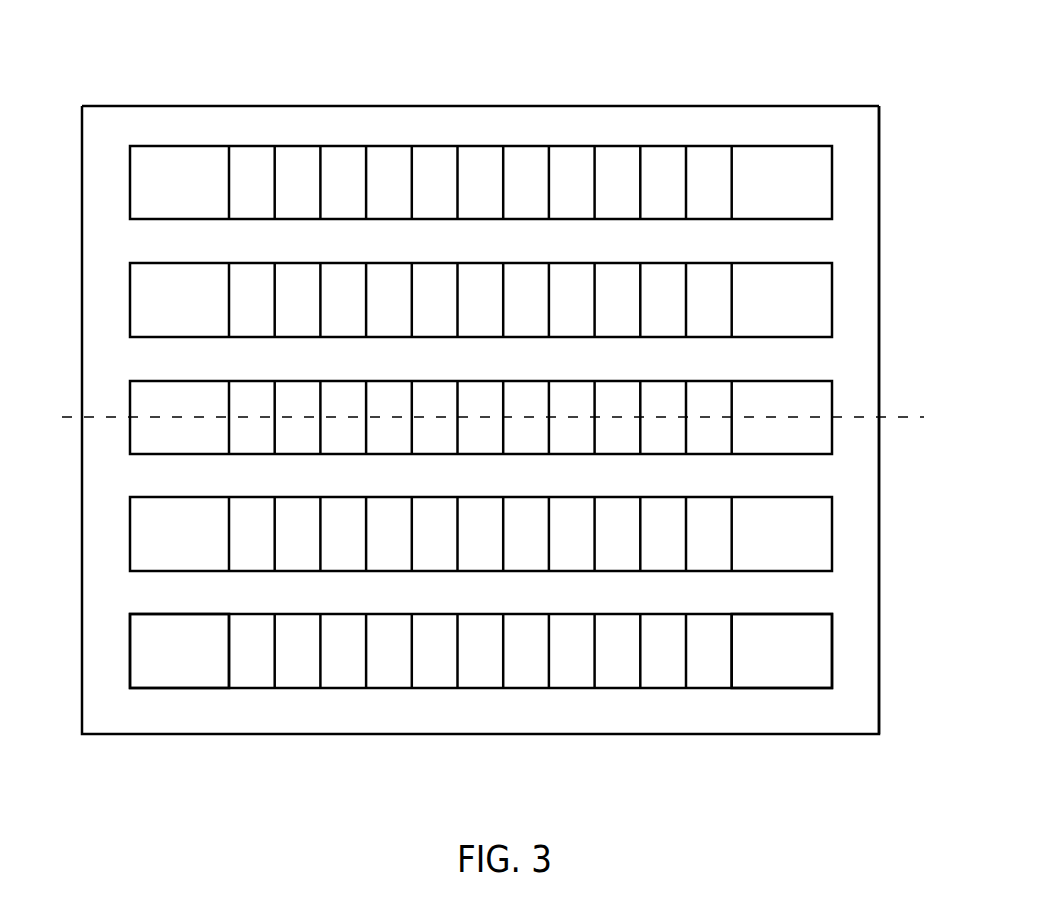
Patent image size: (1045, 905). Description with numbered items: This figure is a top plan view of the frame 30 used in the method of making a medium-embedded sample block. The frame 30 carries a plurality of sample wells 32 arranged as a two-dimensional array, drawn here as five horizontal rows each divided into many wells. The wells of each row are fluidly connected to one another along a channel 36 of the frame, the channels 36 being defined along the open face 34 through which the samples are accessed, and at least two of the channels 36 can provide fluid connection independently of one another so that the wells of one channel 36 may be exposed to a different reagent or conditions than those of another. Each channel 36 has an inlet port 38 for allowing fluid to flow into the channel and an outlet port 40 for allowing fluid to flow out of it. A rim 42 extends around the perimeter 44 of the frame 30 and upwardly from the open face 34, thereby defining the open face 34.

The frame 30 is at (813, 63).
The sample wells 32 is at (538, 158).
The open face 34 is at (858, 512).
The channels 36 is at (120, 184).
The inlet port 38 is at (172, 666).
The outlet port 40 is at (788, 665).
The rim 42 is at (115, 128).
The perimeter 44 is at (880, 187).